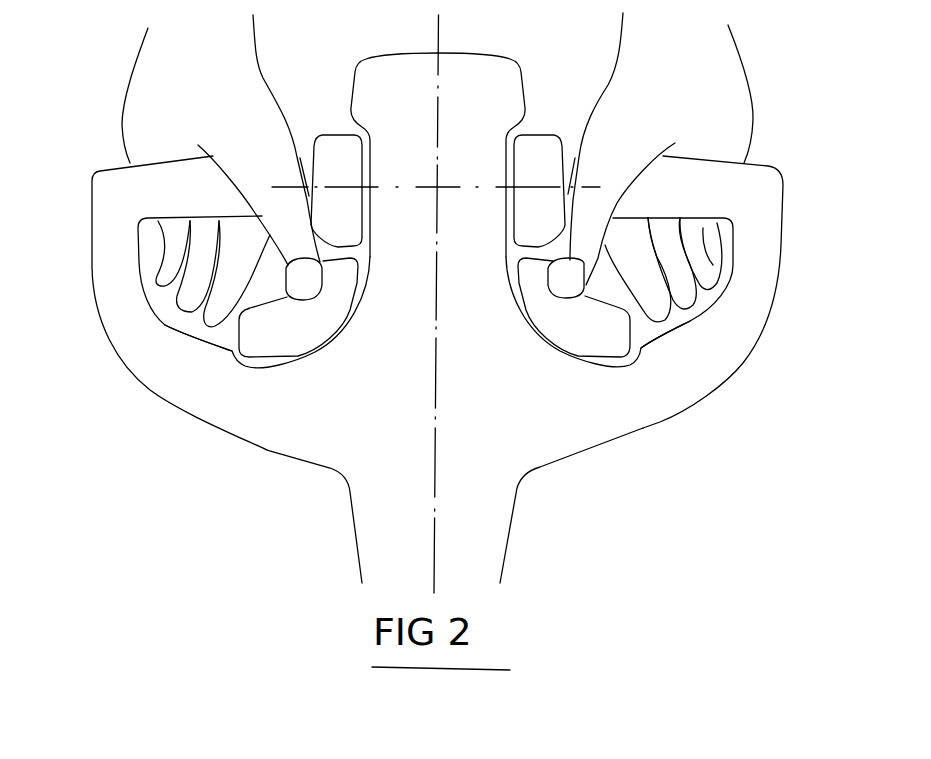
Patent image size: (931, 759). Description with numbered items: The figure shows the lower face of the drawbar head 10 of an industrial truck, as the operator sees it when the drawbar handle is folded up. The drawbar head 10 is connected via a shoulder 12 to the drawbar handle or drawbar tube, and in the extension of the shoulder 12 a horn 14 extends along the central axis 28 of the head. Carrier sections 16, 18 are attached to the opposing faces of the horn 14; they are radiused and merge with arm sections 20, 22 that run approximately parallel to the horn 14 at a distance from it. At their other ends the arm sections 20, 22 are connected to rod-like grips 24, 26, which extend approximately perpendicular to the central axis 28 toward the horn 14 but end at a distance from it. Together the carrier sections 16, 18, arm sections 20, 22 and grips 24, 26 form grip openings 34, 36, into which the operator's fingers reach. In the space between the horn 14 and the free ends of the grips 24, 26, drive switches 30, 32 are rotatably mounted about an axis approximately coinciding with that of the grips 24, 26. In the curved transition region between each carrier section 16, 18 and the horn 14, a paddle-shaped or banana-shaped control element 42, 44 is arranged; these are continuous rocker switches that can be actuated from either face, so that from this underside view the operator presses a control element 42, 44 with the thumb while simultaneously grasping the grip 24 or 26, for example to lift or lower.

The drawbar head 10 is at (787, 140).
The shoulder 12 is at (496, 542).
The horn 14 is at (487, 278).
The carrier section 16 is at (231, 295).
The carrier section 18 is at (646, 281).
The arm section 20 is at (126, 288).
The arm section 22 is at (762, 293).
The grip 24 is at (206, 201).
The grip 26 is at (700, 200).
The central axis 28 is at (440, 33).
The drive switch 30 is at (345, 185).
The drive switch 32 is at (550, 197).
The grip opening 34 is at (173, 312).
The grip opening 36 is at (683, 320).
The control element 42 is at (283, 343).
The control element 44 is at (598, 340).